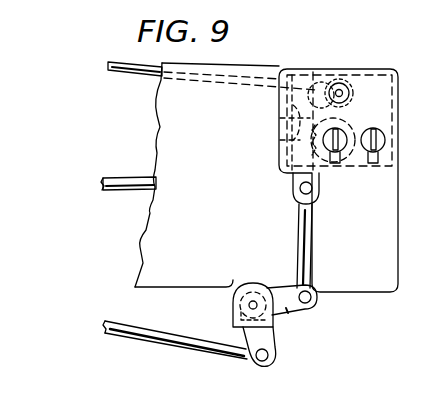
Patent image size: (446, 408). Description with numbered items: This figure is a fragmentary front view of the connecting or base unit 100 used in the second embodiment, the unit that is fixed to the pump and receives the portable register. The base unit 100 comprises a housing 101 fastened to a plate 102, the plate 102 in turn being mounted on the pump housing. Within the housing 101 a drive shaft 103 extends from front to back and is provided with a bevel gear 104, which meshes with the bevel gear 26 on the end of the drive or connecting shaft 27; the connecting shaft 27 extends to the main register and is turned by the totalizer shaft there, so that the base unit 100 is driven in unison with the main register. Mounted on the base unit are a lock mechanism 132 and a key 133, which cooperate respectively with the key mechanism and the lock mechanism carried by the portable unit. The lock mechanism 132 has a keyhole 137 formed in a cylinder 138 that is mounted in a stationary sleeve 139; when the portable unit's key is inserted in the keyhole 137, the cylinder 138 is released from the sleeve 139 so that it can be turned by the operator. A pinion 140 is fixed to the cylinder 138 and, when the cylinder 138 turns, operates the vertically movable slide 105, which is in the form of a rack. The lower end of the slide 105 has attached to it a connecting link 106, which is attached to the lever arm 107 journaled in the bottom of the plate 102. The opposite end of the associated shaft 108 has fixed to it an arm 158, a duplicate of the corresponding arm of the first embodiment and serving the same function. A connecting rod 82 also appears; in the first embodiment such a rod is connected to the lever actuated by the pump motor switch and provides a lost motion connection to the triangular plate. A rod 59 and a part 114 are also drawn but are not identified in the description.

The bevel gear 26 is at (309, 68).
The drive shaft 27 is at (111, 68).
The rod 59 is at (107, 321).
The connecting rod 82 is at (108, 176).
The base unit 100 is at (341, 166).
The housing 101 is at (400, 78).
The plate 102 is at (165, 110).
The drive shaft 103 is at (334, 80).
The bevel gear 104 is at (361, 73).
The slide 105 is at (292, 178).
The connecting link 106 is at (299, 228).
The lever arm 107 is at (311, 311).
The shaft 108 is at (249, 306).
The hub 114 is at (350, 88).
The lock mechanism 132 is at (316, 165).
The key 133 is at (377, 140).
The keyhole 137 is at (330, 143).
The cylinder 138 is at (330, 135).
The sleeve 139 is at (337, 164).
The pinion 140 is at (290, 117).
The arm 158 is at (278, 343).